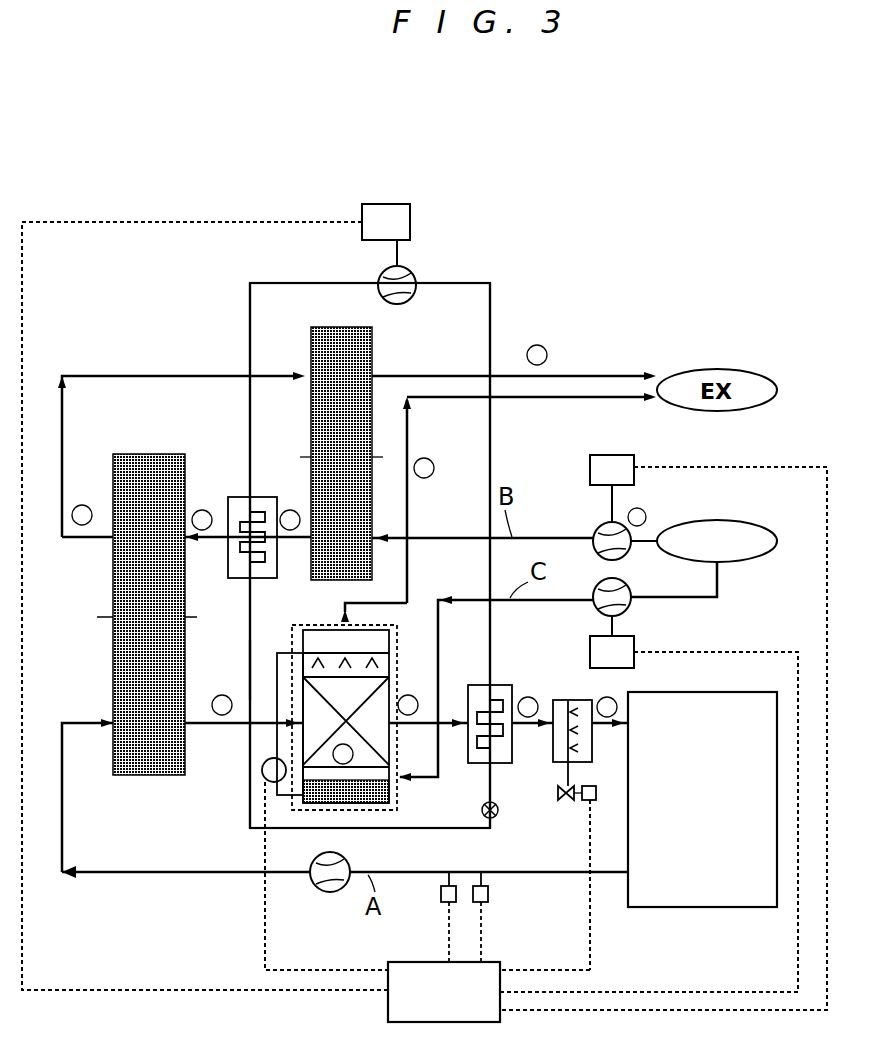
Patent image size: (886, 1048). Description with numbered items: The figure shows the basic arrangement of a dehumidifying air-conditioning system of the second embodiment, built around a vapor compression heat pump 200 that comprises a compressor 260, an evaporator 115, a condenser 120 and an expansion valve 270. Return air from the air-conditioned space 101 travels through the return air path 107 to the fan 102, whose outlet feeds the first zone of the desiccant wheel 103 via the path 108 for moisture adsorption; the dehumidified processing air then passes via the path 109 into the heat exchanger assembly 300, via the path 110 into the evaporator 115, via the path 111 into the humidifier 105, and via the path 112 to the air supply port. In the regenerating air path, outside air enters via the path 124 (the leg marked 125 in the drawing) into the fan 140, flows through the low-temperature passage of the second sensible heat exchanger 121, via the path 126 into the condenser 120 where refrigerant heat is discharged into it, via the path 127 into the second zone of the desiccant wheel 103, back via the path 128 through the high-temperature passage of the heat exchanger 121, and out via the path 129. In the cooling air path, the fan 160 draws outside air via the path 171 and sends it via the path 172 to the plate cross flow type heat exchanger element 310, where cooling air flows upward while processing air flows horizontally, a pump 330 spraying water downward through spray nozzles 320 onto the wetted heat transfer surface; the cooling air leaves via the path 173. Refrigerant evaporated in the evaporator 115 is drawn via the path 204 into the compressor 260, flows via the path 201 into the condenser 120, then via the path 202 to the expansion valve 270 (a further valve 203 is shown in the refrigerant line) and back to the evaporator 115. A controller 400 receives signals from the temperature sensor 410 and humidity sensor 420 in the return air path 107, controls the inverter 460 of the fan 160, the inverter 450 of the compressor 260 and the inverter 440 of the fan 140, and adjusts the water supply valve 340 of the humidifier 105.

The air-conditioned space 101 is at (715, 693).
The fan 102 is at (328, 893).
The desiccant wheel 103 is at (113, 685).
The humidifier 105 is at (562, 700).
The return air path 107 is at (565, 874).
The path 108 is at (218, 874).
The path 109 is at (205, 740).
The path 110 is at (413, 730).
The path 111 is at (530, 730).
The path 112 is at (603, 730).
The evaporator 115 is at (500, 685).
The condenser 120 is at (230, 497).
The second sensible heat exchanger 121 is at (374, 350).
The path 124 is at (650, 533).
The outside air passage 125 is at (540, 540).
The path 126 is at (295, 545).
The path 127 is at (202, 540).
The path 128 is at (140, 378).
The path 129 is at (574, 378).
The fan 140 is at (596, 525).
The cooling air fan 160 is at (628, 585).
The path 171 is at (663, 600).
The path 172 is at (525, 603).
The path 173 is at (409, 432).
The heat pump 200 is at (515, 292).
The path 201 is at (249, 303).
The path 202 is at (249, 662).
The valve 203 is at (510, 800).
The path 204 is at (493, 457).
The compressor 260 is at (378, 300).
The expansion valve 270 is at (496, 815).
The heat exchanger assembly 300 is at (397, 805).
The plate cross flow type heat exchanger element 310 is at (380, 690).
The water spray nozzles 320 is at (300, 625).
The pump 330 is at (262, 782).
The water supply valve 340 is at (582, 802).
The controller 400 is at (398, 962).
The temperature sensor 410 is at (440, 896).
The humidity sensor 420 is at (489, 897).
The inverter 440 is at (615, 455).
The inverter 450 is at (412, 230).
The inverter 460 is at (634, 664).